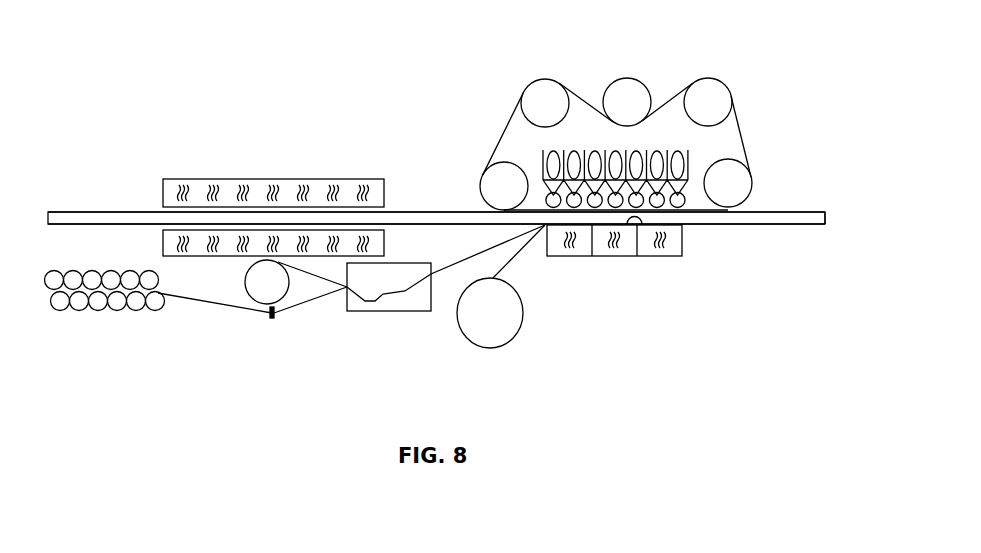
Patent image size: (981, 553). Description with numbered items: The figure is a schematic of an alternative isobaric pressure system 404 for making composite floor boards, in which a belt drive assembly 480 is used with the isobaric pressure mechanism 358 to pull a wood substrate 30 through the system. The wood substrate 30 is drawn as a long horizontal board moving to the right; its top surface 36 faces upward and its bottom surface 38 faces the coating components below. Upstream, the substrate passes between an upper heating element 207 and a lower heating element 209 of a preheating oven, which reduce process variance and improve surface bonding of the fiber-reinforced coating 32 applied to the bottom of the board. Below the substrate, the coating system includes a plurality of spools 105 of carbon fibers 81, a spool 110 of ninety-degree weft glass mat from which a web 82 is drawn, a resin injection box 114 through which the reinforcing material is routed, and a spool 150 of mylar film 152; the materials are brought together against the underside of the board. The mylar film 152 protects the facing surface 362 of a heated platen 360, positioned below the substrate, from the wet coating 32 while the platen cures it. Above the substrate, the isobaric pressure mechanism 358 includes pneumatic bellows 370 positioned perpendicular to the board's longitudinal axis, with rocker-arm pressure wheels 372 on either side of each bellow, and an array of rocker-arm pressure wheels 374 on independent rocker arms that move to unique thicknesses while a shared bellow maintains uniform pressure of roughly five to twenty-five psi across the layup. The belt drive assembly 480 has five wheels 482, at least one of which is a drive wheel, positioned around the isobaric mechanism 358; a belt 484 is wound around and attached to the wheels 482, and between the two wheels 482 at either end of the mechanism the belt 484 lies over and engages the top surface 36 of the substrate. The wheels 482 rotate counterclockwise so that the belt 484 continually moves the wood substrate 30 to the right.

The wood substrate 30 is at (88, 218).
The fiber-reinforced coating 32 is at (806, 233).
The top surface 36 is at (140, 212).
The second surface of substrate 38 is at (98, 226).
The carbon fibers 81 is at (217, 307).
The film 82 is at (312, 277).
The spools 105 is at (78, 310).
The spool 110 is at (290, 284).
The resin injection box 114 is at (389, 322).
The spool 150 is at (493, 350).
The mylar film 152 is at (520, 253).
The upper heating element 207 is at (177, 190).
The lower heating element 209 is at (178, 242).
The isobaric pressure mechanism 358 is at (658, 140).
The heated platen 360 is at (575, 250).
The facing surface 362 is at (642, 224).
The pneumatic bellows 370 is at (575, 160).
The rocker-arm pressure wheels 372 is at (675, 185).
The rocker-arm pressure wheels 374 is at (675, 202).
The isobaric pressure system 404 is at (722, 48).
The belt drive assembly 480 is at (745, 81).
The wheels 482 is at (543, 80).
The belt 484 is at (743, 133).